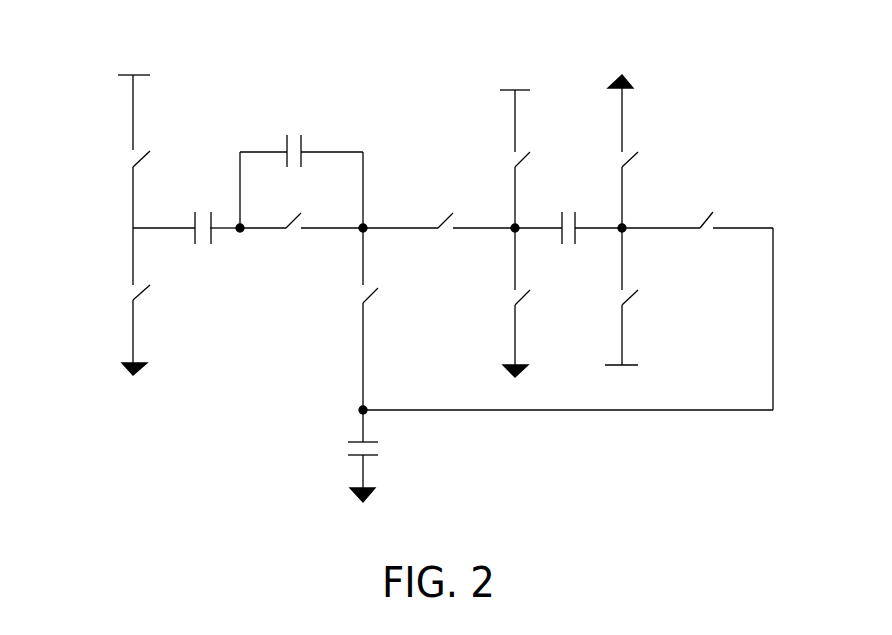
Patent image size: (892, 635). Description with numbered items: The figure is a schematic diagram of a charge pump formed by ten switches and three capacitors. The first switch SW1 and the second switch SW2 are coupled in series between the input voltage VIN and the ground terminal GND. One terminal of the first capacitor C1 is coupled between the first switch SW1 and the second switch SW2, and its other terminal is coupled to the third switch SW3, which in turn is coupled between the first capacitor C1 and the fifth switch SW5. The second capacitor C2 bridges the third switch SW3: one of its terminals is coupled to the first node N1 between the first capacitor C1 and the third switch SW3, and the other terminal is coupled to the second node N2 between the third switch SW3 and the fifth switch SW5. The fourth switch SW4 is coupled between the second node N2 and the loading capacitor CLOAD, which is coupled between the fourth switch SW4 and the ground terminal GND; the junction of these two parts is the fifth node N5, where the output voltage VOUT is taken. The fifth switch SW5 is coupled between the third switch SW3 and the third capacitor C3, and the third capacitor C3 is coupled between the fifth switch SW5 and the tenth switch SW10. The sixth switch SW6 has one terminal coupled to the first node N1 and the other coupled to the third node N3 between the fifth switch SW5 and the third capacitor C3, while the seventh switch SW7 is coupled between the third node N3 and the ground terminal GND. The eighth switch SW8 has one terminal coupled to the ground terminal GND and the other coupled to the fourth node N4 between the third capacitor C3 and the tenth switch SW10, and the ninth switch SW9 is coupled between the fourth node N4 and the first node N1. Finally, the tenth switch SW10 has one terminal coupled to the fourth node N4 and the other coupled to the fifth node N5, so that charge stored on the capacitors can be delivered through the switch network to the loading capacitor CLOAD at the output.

The input voltage VIN is at (134, 91).
The output voltage VOUT is at (568, 392).
The ground terminal GND is at (375, 288).
The first switch SW1 is at (117, 185).
The second switch SW2 is at (117, 295).
The third switch SW3 is at (296, 238).
The fourth switch SW4 is at (342, 319).
The fifth switch SW5 is at (447, 238).
The sixth switch SW6 is at (496, 159).
The seventh switch SW7 is at (496, 296).
The eighth switch SW8 is at (602, 158).
The ninth switch SW9 is at (602, 296).
The tenth switch SW10 is at (725, 311).
The first capacitor C1 is at (205, 207).
The second capacitor C2 is at (301, 162).
The third capacitor C3 is at (566, 209).
The loading capacitor CLOAD is at (320, 449).
The first node N1 is at (433, 229).
The second node N2 is at (378, 244).
The third node N3 is at (529, 244).
The fourth node N4 is at (635, 244).
The fifth node N5 is at (345, 404).